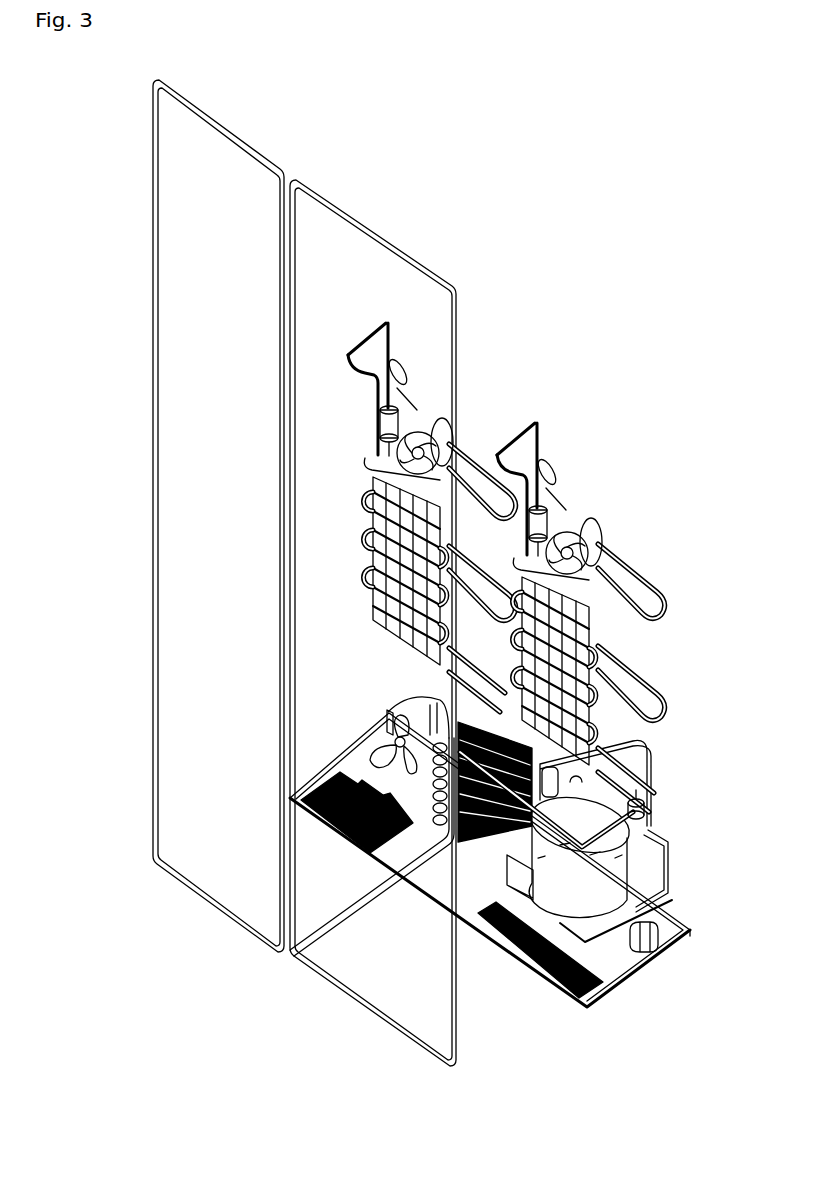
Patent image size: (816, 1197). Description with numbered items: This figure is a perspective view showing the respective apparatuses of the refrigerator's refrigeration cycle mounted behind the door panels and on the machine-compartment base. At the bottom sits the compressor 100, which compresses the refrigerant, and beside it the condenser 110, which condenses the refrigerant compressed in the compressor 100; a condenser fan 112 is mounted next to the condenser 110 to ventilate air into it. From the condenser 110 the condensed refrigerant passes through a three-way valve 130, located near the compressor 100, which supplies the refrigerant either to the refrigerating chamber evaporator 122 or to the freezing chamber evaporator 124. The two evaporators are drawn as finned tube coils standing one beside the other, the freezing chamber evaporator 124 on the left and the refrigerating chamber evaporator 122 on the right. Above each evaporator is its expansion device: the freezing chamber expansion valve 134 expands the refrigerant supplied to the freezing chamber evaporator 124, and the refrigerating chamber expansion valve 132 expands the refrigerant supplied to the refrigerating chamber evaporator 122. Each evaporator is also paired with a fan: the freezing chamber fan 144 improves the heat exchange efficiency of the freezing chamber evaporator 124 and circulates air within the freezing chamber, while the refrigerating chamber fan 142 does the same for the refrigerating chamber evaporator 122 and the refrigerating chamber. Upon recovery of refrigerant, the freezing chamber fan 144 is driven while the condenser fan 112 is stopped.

The compressor 100 is at (603, 903).
The condenser 110 is at (470, 832).
The condenser fan 112 is at (390, 728).
The refrigerating chamber evaporator 122 is at (612, 645).
The freezing chamber evaporator 124 is at (368, 520).
The 3-way valve 130 is at (650, 800).
The refrigerating chamber expansion valve 132 is at (540, 510).
The freezing chamber expansion valve 134 is at (380, 418).
The refrigerating chamber fan 142 is at (600, 530).
The freezing chamber fan 144 is at (450, 423).